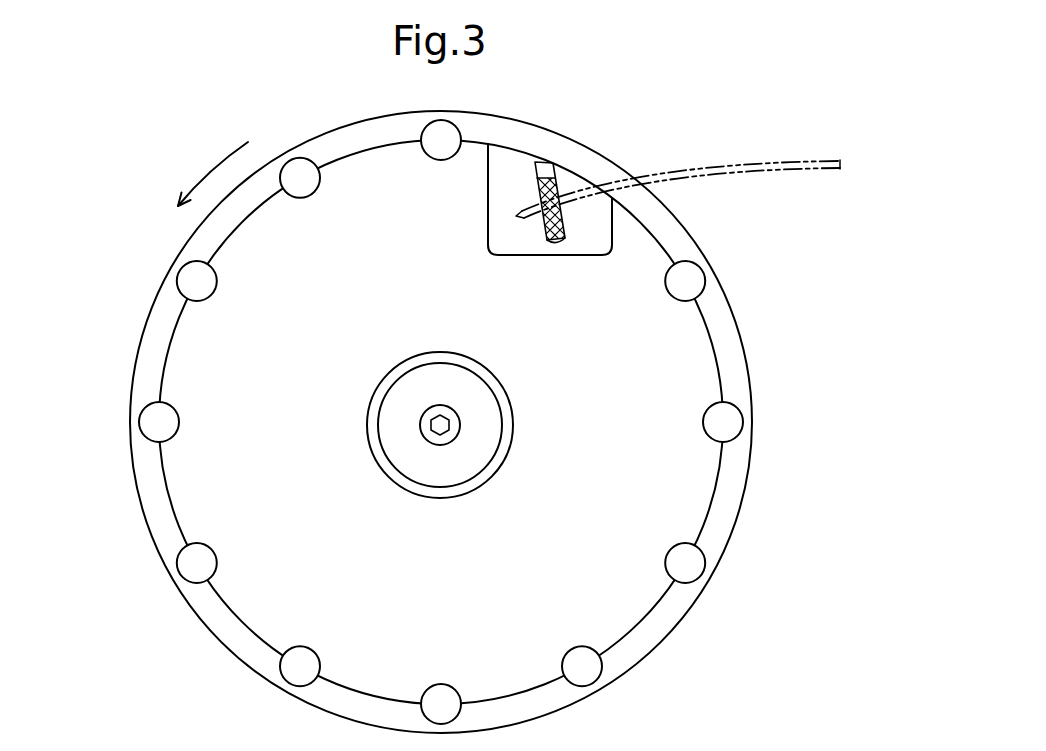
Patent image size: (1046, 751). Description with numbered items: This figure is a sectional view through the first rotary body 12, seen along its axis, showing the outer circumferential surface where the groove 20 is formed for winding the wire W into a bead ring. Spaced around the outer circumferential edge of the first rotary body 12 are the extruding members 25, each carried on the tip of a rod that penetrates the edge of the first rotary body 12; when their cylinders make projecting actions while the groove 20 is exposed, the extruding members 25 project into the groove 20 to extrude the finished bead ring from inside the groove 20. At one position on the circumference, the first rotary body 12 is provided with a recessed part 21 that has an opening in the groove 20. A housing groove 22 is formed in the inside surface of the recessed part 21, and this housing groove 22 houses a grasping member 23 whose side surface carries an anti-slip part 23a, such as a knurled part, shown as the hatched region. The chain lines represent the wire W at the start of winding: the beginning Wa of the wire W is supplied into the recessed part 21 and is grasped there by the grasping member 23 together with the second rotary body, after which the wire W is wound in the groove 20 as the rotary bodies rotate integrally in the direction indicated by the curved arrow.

The first rotary body 12 is at (140, 350).
The groove 20 is at (358, 147).
The recessed part 21 is at (488, 205).
The housing groove 22 is at (543, 162).
The grasping member 23 is at (562, 236).
The anti-slip part 23a is at (546, 236).
The extruding member 25 is at (300, 192).
The wire W is at (730, 161).
The beginning of the wire Wa is at (524, 222).